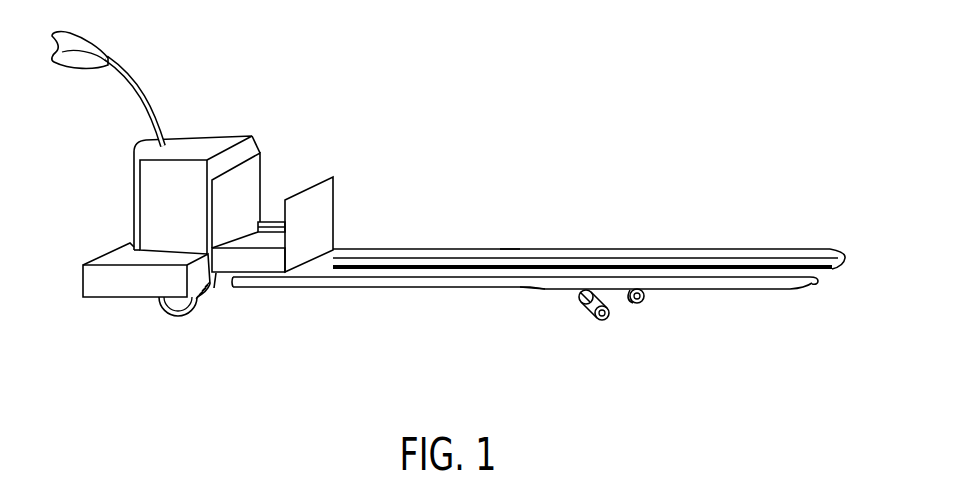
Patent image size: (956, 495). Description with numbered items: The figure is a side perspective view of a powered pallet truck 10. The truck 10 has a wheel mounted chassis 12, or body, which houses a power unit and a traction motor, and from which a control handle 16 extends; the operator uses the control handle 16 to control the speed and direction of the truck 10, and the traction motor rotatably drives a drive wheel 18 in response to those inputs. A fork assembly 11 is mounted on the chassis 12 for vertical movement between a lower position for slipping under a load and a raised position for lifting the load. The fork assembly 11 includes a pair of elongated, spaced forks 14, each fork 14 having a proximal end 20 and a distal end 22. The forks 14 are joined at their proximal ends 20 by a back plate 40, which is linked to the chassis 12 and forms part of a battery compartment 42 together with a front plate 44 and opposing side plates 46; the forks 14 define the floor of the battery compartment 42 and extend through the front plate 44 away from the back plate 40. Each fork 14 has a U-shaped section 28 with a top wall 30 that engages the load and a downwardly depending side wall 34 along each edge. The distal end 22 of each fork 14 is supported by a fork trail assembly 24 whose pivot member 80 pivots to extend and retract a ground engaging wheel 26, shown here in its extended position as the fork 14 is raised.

The powered pallet truck 10 is at (436, 165).
The fork assembly 11 is at (450, 218).
The chassis 12 is at (82, 282).
The fork 14 is at (773, 248).
The control handle 16 is at (130, 72).
The drive wheel 18 is at (180, 311).
The proximal end 20 is at (334, 247).
The distal end 22 is at (840, 252).
The fork trail assembly 24 is at (566, 305).
The ground engaging wheel 26 is at (600, 320).
The U-shaped section 28 is at (509, 240).
The top wall 30 is at (654, 270).
The side wall 34 is at (502, 284).
The back plate 40 is at (263, 170).
The battery compartment 42 is at (273, 198).
The front plate 44 is at (333, 185).
The side plate 46 is at (272, 222).
The pivot member 80 is at (583, 297).